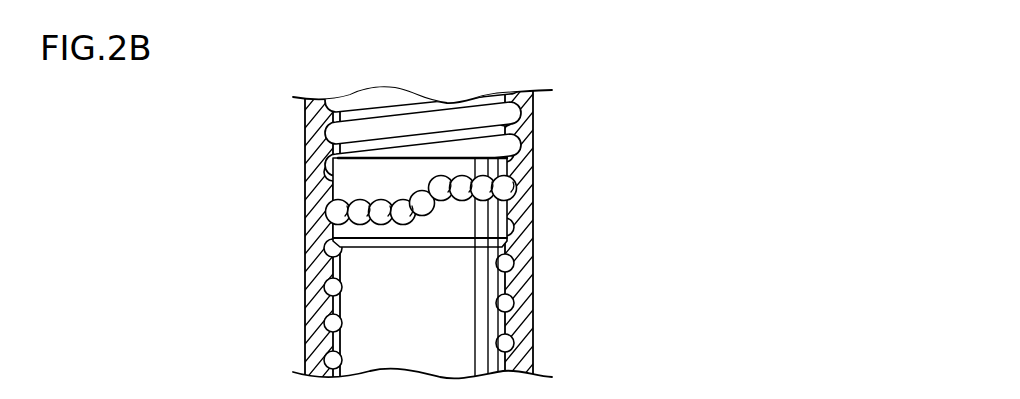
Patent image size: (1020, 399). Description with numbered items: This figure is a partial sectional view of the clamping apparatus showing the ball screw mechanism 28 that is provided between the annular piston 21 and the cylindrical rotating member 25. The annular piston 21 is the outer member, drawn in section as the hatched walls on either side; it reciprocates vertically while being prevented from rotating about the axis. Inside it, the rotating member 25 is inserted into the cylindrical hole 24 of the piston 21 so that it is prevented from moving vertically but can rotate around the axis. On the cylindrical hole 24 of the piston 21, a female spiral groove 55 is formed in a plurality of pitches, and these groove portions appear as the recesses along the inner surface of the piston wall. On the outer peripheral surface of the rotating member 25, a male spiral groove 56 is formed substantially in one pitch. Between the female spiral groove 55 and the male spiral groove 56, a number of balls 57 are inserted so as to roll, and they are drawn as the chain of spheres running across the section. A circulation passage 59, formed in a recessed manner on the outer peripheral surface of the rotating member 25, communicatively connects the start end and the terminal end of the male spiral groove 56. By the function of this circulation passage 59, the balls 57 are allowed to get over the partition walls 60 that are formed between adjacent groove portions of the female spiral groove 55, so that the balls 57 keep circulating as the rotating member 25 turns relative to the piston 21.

The annular piston 21 is at (543, 264).
The cylindrical hole 24 is at (350, 100).
The rotating member 25 is at (517, 332).
The ball screw mechanism 28 is at (531, 196).
The female spiral groove 55 is at (510, 148).
The male spiral groove 56 is at (379, 231).
The balls 57 is at (443, 184).
The circulation passage 59 is at (400, 199).
The partition walls 60 is at (328, 230).